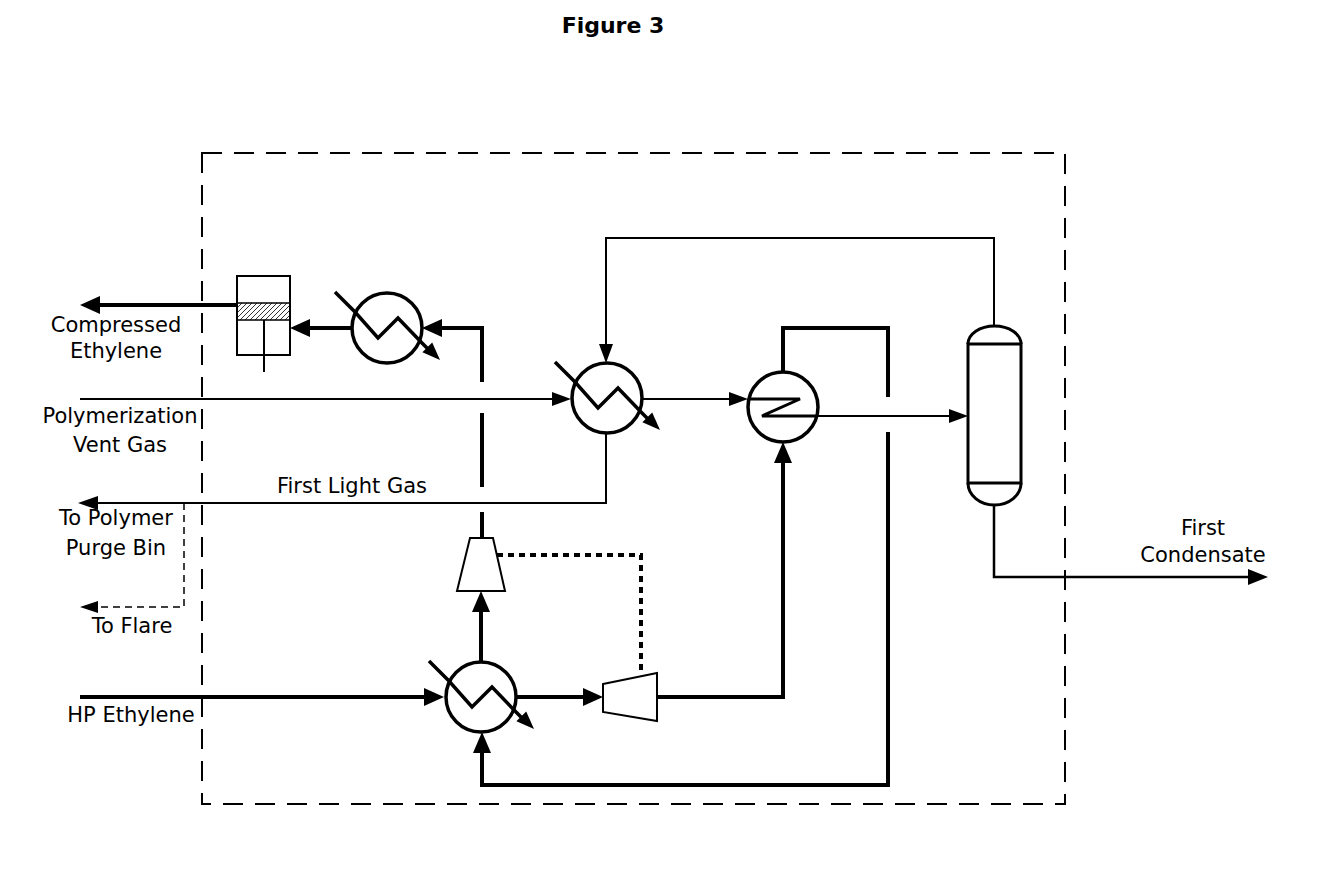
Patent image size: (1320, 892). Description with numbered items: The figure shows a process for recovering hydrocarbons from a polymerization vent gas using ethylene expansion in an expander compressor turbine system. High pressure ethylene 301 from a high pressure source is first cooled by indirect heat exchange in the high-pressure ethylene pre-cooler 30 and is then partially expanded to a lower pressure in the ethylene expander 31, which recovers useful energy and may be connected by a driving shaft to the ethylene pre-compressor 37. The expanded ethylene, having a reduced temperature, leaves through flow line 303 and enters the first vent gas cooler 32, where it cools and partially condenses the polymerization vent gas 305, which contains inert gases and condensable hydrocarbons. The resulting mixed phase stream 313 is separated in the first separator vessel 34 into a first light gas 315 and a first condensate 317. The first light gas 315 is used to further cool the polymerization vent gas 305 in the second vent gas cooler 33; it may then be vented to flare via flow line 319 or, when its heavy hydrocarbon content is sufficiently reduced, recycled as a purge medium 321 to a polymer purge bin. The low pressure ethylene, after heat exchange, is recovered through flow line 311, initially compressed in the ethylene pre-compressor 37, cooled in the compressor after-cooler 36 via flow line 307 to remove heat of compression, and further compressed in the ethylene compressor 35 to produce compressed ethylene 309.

The high-pressure ethylene pre-cooler 30 is at (462, 733).
The ethylene expander 31 is at (630, 697).
The first vent gas cooler 32 is at (775, 372).
The second vent gas cooler 33 is at (598, 361).
The first separator vessel 34 is at (994, 415).
The ethylene compressor 35 is at (255, 275).
The compressor after-cooler 36 is at (383, 293).
The ethylene pre-compressor 37 is at (549, 605).
The high pressure ethylene 301 is at (262, 685).
The expanded ethylene flow line 303 is at (724, 569).
The polymerization vent gas 305 is at (325, 389).
The ethylene flow line 307 is at (390, 490).
The compressed ethylene 309 is at (158, 296).
The ethylene flow line 311 is at (680, 556).
The mixed phase stream flow line 313 is at (892, 404).
The first light gas 315 is at (796, 286).
The first condensate 317 is at (1131, 561).
The flow line to flare 319 is at (132, 558).
The purge medium 321 is at (342, 471).